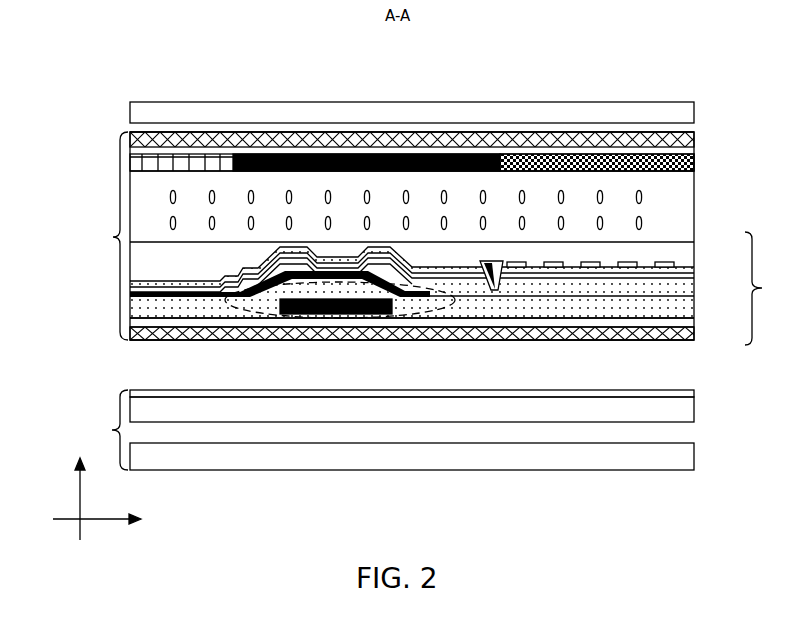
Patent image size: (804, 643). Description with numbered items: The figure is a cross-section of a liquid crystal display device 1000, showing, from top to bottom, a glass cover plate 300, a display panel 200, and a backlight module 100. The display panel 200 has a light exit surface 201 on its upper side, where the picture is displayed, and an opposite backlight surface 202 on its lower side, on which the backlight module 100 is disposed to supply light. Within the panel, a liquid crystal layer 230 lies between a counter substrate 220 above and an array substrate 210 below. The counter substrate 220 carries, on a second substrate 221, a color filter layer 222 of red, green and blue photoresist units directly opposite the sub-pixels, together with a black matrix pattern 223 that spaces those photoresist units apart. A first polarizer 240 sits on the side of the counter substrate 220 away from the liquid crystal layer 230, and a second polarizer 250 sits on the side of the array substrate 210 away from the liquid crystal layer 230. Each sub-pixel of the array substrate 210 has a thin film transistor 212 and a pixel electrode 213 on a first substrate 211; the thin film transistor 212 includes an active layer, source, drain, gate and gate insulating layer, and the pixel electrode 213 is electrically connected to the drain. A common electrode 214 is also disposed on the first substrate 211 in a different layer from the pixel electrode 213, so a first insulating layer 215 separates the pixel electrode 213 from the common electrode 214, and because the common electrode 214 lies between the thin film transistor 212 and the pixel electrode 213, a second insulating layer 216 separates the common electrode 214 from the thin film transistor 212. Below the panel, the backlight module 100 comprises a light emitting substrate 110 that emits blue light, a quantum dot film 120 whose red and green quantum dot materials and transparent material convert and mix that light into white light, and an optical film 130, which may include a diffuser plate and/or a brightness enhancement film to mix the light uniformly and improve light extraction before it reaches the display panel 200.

The display device 1000 is at (65, 33).
The glass cover plate 300 is at (155, 112).
The display panel 200 is at (384, 236).
The light exit surface 201 is at (147, 132).
The backlight surface 202 is at (152, 341).
The first polarizer 240 is at (678, 142).
The counter substrate 220 is at (440, 120).
The second substrate 221 is at (361, 148).
The color filter layer 222 is at (564, 152).
The black matrix pattern 223 is at (460, 156).
The liquid crystal layer 230 is at (680, 194).
The array substrate 210 is at (771, 288).
The pixel electrode 213 is at (676, 262).
The first insulating layer 215 is at (676, 269).
The common electrode 214 is at (670, 281).
The second insulating layer 216 is at (668, 297).
The thin film transistor 212 is at (237, 308).
The first substrate 211 is at (678, 319).
The second polarizer 250 is at (678, 332).
The backlight module 100 is at (103, 430).
The optical film 130 is at (682, 393).
The quantum dot film 120 is at (682, 420).
The light emitting substrate 110 is at (682, 461).